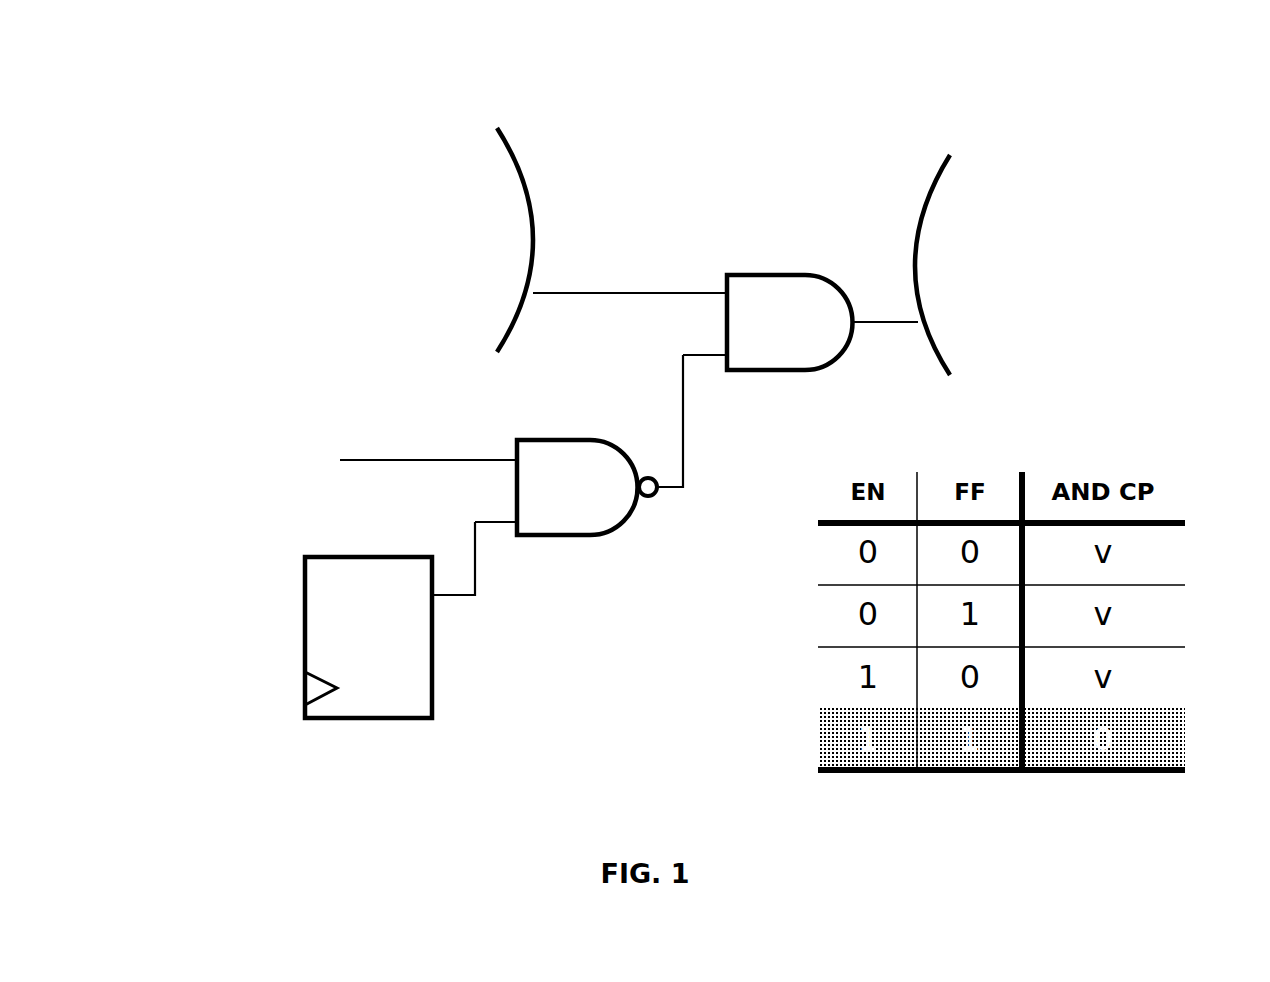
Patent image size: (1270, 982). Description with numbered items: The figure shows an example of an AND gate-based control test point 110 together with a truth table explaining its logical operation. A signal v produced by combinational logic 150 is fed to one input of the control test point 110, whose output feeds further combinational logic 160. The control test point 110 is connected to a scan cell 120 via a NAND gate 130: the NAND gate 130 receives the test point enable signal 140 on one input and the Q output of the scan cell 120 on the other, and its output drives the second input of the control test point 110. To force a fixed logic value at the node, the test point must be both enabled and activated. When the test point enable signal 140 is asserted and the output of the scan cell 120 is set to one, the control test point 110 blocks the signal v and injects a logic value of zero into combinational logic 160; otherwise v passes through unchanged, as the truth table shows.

The AND gate-based control test point 110 is at (795, 266).
The scan cell 120 is at (389, 651).
The NAND gate 130 is at (581, 499).
The test point enable signal 140 is at (463, 454).
The combinational logic 150 is at (433, 149).
The combinational logic 160 is at (1095, 169).